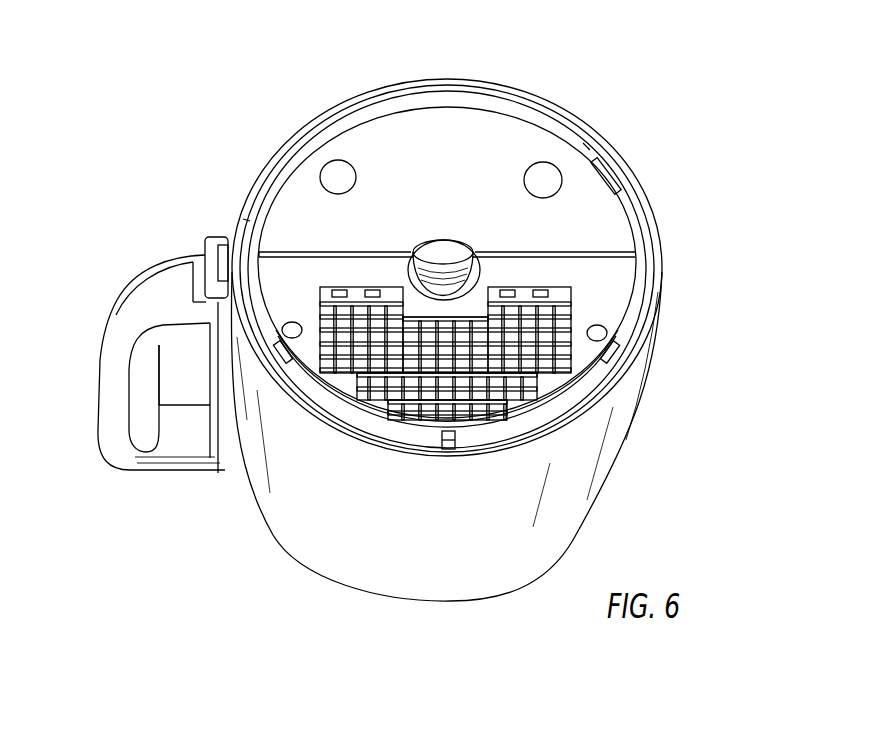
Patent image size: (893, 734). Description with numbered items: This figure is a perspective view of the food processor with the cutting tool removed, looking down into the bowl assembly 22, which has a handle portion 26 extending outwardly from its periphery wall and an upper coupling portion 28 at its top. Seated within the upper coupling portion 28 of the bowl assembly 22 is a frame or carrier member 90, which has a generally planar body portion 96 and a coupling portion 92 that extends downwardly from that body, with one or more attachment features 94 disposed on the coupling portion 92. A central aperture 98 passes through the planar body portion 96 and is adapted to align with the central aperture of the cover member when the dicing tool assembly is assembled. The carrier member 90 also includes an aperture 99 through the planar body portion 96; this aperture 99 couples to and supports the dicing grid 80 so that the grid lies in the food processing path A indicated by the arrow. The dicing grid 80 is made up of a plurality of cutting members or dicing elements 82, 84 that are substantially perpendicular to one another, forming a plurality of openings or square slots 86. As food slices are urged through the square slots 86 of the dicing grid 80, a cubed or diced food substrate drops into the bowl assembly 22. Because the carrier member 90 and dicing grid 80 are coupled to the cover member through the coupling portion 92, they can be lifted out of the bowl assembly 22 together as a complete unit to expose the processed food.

The bowl assembly 22 is at (630, 430).
The handle portion 26 is at (112, 307).
The upper coupling portion 28 is at (587, 152).
The dicing grid 80 is at (523, 445).
The dicing element 82 is at (510, 420).
The dicing element 84 is at (457, 420).
The square slots 86 is at (437, 405).
The carrier member 90 is at (441, 344).
The coupling portion 92 is at (250, 292).
The attachment features 94 is at (612, 350).
The generally planar body portion 96 is at (392, 183).
The central aperture 98 is at (467, 240).
The aperture 99 is at (575, 298).
The food processing path A is at (449, 222).